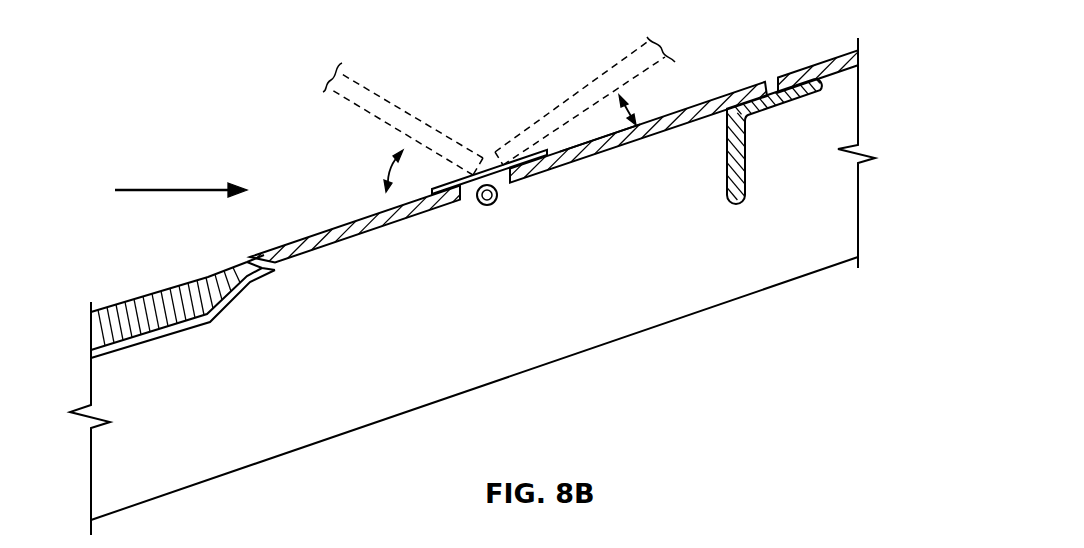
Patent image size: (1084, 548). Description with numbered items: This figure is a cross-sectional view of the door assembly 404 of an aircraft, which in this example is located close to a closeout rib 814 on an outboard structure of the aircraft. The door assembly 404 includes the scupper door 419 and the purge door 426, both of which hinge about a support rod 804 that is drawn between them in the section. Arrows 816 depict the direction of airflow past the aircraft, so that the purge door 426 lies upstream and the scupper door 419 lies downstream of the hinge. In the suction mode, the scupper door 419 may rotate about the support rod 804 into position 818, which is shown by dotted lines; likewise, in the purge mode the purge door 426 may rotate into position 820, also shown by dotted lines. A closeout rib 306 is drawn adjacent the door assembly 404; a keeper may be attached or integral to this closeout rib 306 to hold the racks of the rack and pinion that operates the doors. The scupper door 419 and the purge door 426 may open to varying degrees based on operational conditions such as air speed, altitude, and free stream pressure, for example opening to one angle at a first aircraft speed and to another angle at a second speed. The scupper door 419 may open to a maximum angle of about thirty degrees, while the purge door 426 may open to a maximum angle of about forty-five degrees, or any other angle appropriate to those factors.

The closeout rib 306 is at (743, 188).
The door assembly 404 is at (690, 80).
The scupper door 419 is at (598, 152).
The purge door 426 is at (330, 238).
The support rod 804 is at (487, 207).
The closeout rib 814 is at (848, 218).
The arrows 816 is at (166, 192).
The position 818 is at (570, 110).
The position 820 is at (380, 110).